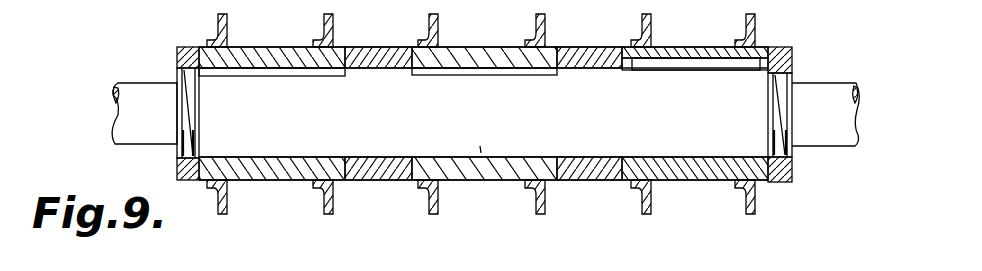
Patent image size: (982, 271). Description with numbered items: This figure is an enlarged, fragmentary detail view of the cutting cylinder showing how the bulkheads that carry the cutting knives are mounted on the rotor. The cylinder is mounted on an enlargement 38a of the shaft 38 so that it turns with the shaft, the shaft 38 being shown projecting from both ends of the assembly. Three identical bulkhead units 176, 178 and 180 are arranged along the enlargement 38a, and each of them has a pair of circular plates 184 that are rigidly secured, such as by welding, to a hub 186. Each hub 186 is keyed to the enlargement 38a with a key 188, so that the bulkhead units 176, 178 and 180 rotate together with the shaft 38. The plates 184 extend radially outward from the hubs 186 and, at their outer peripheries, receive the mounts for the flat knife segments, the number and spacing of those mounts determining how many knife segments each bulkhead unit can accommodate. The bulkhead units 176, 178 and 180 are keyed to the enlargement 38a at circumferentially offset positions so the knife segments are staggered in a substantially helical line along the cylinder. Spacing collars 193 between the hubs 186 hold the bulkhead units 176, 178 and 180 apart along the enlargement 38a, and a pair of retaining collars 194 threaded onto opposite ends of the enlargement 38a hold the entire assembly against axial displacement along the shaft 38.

The shaft 38 is at (843, 118).
The enlargement of shaft 38a is at (467, 181).
The bulkhead unit 176 is at (626, 202).
The bulkhead unit 178 is at (412, 202).
The bulkhead unit 180 is at (201, 208).
The circular plates 184 is at (537, 37).
The hub 186 is at (235, 54).
The key 188 is at (687, 68).
The spacing collars 193 is at (370, 52).
The retaining collars 194 is at (178, 56).